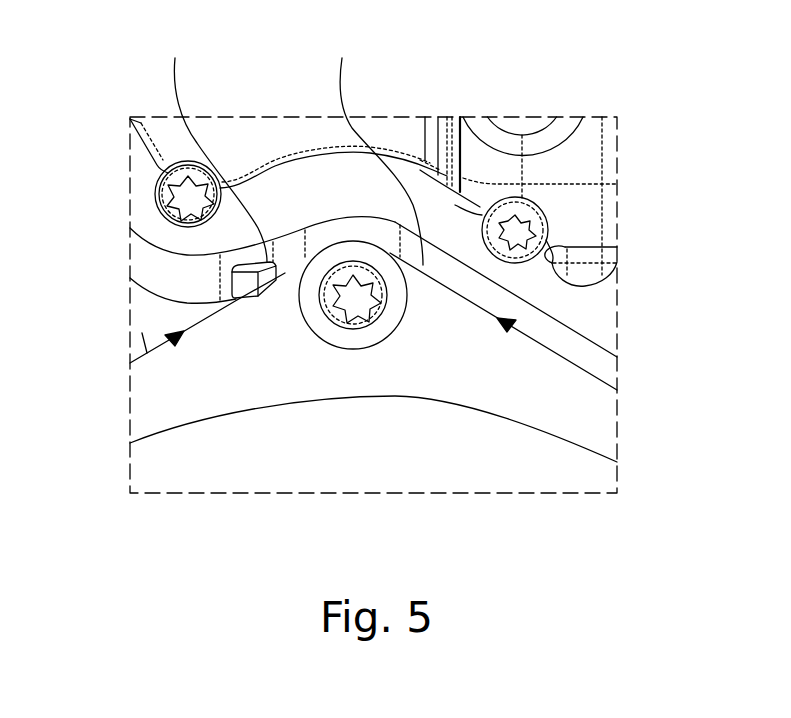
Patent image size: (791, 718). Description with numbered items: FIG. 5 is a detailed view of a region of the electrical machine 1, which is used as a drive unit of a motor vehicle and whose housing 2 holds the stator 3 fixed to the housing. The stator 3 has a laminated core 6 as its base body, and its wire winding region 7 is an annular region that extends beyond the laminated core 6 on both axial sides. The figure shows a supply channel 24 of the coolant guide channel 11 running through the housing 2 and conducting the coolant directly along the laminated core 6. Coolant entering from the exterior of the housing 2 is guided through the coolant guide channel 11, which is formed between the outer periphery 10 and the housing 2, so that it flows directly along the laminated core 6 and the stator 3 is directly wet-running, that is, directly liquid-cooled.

The electrical machine 1 is at (545, 95).
The housing 2 is at (312, 143).
The stator 3 is at (116, 422).
The laminated core 6 is at (597, 412).
The wire winding region 7 is at (277, 480).
The outer periphery 10 is at (147, 355).
The coolant guide channel 11 is at (545, 307).
The supply channel 24 is at (292, 150).